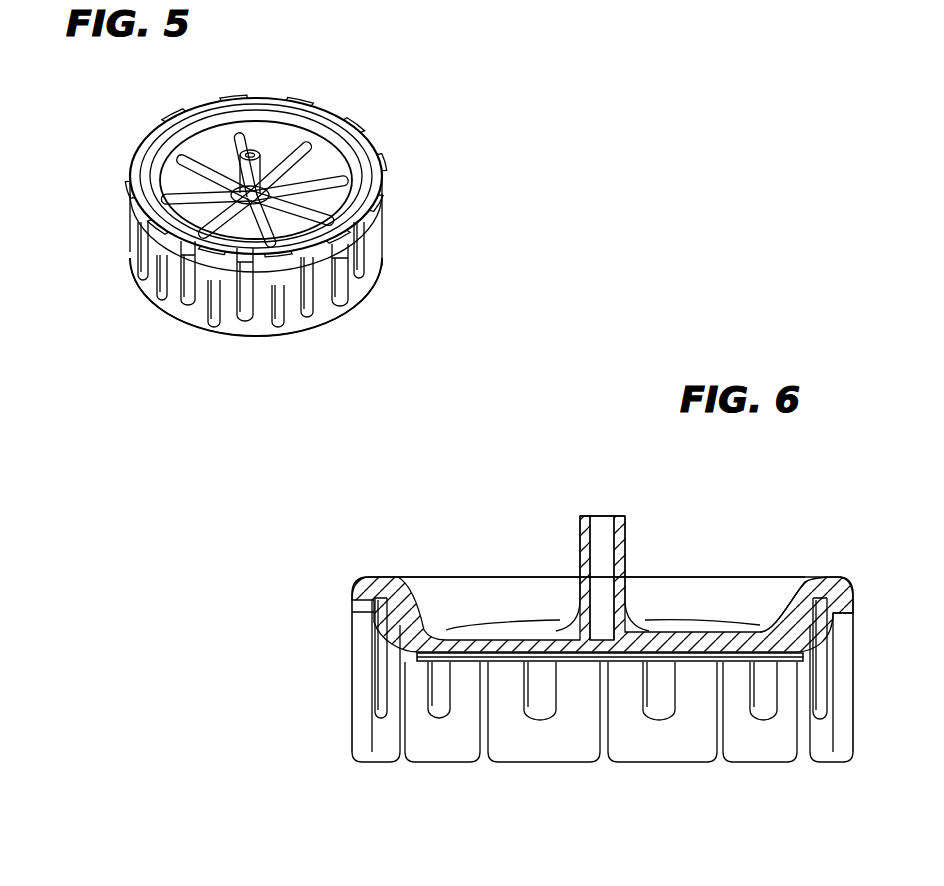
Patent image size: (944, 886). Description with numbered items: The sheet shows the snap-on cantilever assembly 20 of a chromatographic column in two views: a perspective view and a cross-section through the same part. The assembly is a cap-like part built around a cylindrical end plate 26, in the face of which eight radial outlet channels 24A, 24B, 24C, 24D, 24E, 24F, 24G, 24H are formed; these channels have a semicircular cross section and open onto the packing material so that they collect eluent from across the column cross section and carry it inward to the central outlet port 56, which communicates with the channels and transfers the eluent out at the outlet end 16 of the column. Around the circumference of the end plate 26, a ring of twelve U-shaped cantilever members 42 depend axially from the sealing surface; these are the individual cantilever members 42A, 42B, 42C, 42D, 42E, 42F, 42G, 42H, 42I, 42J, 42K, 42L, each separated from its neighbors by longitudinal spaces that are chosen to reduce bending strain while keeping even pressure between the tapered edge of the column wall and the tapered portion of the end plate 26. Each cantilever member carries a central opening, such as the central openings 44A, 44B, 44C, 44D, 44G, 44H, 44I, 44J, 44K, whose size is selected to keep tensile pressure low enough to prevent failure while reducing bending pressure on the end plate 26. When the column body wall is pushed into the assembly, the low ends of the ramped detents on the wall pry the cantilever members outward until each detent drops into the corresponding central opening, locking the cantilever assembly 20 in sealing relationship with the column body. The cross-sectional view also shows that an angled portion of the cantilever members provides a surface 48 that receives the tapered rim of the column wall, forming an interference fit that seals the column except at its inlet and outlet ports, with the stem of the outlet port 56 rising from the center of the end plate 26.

In FIG. 6, the outlet end 16 is at (248, 885).
In FIG. 5, the cantilever assembly 20 is at (388, 72).
In FIG. 6, the cantilever assembly 20 is at (532, 520).
In FIG. 5, the outlet channel 24A is at (165, 140).
In FIG. 5, the outlet channel 24B is at (250, 140).
In FIG. 5, the outlet channel 24C is at (340, 108).
In FIG. 6, the outlet channel 24C is at (765, 612).
In FIG. 5, the outlet channel 24D is at (340, 190).
In FIG. 6, the outlet channel 24D is at (700, 632).
In FIG. 5, the outlet channel 24E is at (345, 300).
In FIG. 5, the outlet channel 24F is at (205, 330).
In FIG. 5, the outlet channel 24G is at (175, 292).
In FIG. 5, the outlet channel 24H is at (172, 190).
In FIG. 6, the outlet channel 24H is at (488, 633).
In FIG. 5, the cylindrical end plate 26 is at (165, 160).
In FIG. 6, the cylindrical end plate 26 is at (445, 712).
In FIG. 5, the cantilever members 42 is at (372, 142).
In FIG. 5, the cantilever member 42A is at (182, 108).
In FIG. 6, the cantilever member 42A is at (453, 750).
In FIG. 5, the cantilever member 42B is at (240, 96).
In FIG. 6, the cantilever member 42B is at (565, 750).
In FIG. 5, the cantilever member 42C is at (333, 68).
In FIG. 6, the cantilever member 42C is at (675, 750).
In FIG. 5, the cantilever member 42D is at (358, 122).
In FIG. 6, the cantilever member 42D is at (770, 750).
In FIG. 5, the cantilever member 42E is at (381, 168).
In FIG. 5, the cantilever member 42F is at (383, 252).
In FIG. 5, the cantilever member 42G is at (362, 294).
In FIG. 5, the cantilever member 42H is at (300, 333).
In FIG. 5, the cantilever member 42I is at (226, 332).
In FIG. 5, the cantilever member 42J is at (190, 312).
In FIG. 5, the cantilever member 42K is at (170, 288).
In FIG. 5, the cantilever member 42L is at (132, 240).
In FIG. 6, the central opening 44A is at (440, 720).
In FIG. 6, the central opening 44B is at (540, 720).
In FIG. 6, the central opening 44C is at (660, 720).
In FIG. 6, the central opening 44D is at (765, 720).
In FIG. 5, the central opening 44G is at (352, 273).
In FIG. 5, the central opening 44H is at (318, 300).
In FIG. 5, the central opening 44I is at (250, 338).
In FIG. 5, the central opening 44J is at (190, 300).
In FIG. 5, the central opening 44K is at (145, 245).
In FIG. 6, the surface 48 is at (372, 635).
In FIG. 5, the outlet port 56 is at (272, 203).
In FIG. 6, the outlet port 56 is at (628, 540).